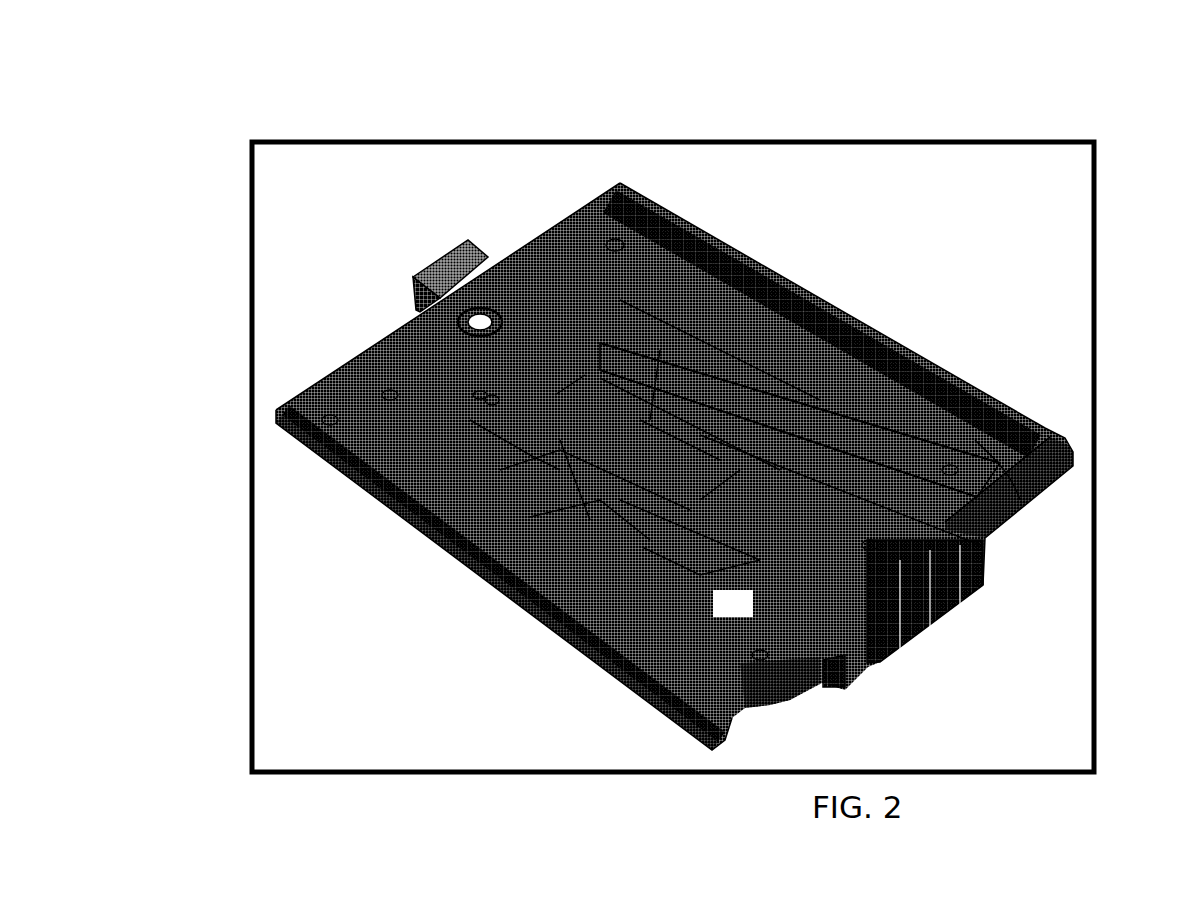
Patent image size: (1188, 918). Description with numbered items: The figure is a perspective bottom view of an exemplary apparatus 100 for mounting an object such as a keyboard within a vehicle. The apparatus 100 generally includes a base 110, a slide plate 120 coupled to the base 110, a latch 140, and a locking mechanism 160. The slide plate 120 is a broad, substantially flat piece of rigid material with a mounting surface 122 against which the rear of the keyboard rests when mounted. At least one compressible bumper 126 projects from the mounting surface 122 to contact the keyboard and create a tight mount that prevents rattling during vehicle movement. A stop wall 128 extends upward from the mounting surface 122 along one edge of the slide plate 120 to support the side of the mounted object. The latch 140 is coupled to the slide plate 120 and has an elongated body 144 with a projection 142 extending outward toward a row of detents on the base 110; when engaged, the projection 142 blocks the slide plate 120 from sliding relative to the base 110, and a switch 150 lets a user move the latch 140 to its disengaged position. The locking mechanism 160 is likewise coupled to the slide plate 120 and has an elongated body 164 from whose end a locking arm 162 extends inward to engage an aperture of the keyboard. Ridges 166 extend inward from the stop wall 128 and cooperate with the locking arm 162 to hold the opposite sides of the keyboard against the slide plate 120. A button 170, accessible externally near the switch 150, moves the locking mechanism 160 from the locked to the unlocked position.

The apparatus 100 is at (325, 138).
The base 110 is at (866, 338).
The slide plate 120 is at (278, 432).
The mounting surface 122 is at (531, 238).
The bumper 126 is at (458, 327).
The stop wall 128 is at (1046, 415).
The latch 140 is at (492, 412).
The projection 142 is at (530, 517).
The elongated body 144 is at (642, 547).
The switch 150 is at (850, 673).
The locking mechanism 160 is at (742, 388).
The locking arm 162 is at (443, 257).
The elongated body 164 is at (862, 477).
The ridges 166 is at (978, 440).
The button 170 is at (933, 620).